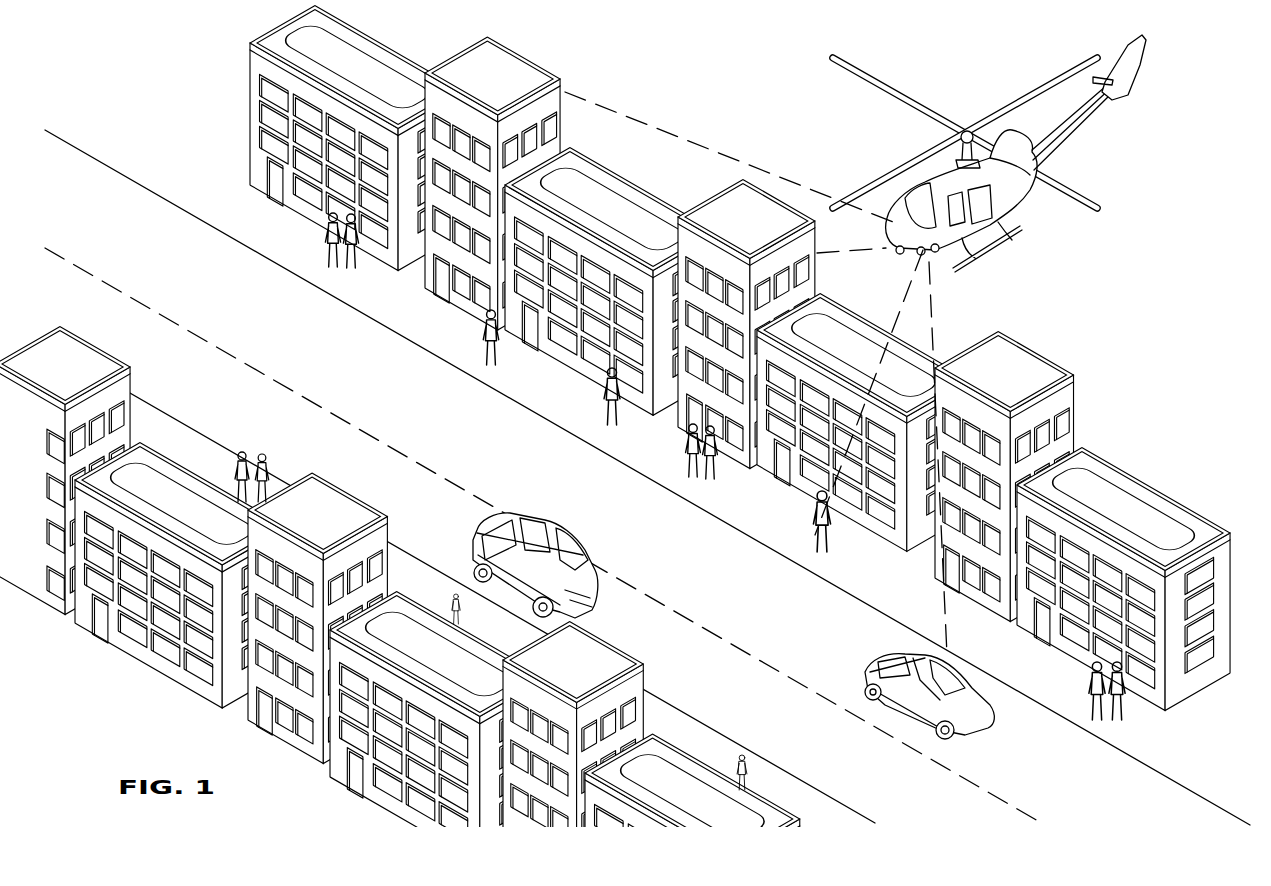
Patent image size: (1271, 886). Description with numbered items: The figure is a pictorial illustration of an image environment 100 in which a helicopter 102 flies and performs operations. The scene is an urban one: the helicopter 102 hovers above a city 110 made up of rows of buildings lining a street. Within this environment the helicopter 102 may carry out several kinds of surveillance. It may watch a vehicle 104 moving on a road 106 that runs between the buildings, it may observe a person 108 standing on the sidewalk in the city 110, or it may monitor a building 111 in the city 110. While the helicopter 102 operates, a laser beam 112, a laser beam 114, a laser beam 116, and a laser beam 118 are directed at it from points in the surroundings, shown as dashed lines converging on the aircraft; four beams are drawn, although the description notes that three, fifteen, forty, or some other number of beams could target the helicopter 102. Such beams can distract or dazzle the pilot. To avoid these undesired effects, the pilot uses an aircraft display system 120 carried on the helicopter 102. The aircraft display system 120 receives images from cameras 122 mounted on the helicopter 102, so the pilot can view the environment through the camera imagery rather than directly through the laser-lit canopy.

The image environment 100 is at (1188, 222).
The helicopter 102 is at (1081, 112).
The vehicle 104 is at (549, 537).
The road 106 is at (267, 377).
The person 108 is at (605, 407).
The city 110 is at (163, 95).
The building 111 is at (673, 241).
The laser beam 112 is at (815, 253).
The laser beam 114 is at (873, 366).
The laser beam 116 is at (705, 140).
The laser beam 118 is at (955, 668).
The aircraft display system 120 is at (1012, 196).
The cameras 122 is at (948, 253).